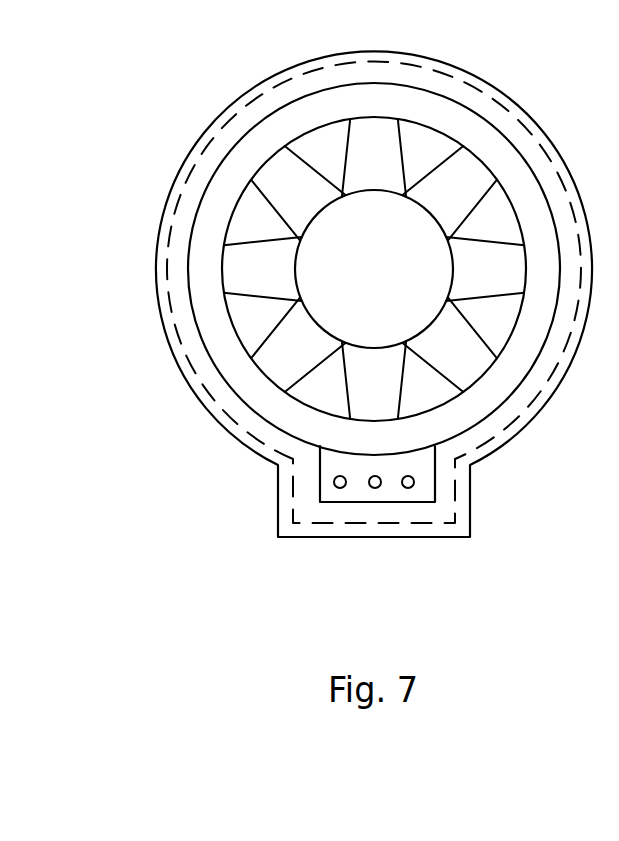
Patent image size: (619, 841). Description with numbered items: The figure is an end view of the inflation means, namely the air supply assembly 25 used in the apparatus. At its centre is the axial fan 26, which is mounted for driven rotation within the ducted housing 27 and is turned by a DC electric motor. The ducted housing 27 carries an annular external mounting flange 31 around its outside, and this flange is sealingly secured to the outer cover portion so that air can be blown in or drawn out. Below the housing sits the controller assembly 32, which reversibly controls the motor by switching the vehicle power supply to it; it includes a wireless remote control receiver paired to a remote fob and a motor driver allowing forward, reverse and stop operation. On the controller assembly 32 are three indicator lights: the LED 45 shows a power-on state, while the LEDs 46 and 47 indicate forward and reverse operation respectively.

The air supply assembly 25 is at (530, 87).
The axial fan 26 is at (263, 277).
The ducted housing 27 is at (257, 395).
The annular external mounting flange 31 is at (203, 135).
The controller assembly 32 is at (287, 517).
The LED 45 is at (376, 489).
The LED 46 is at (342, 489).
The LED 47 is at (412, 488).